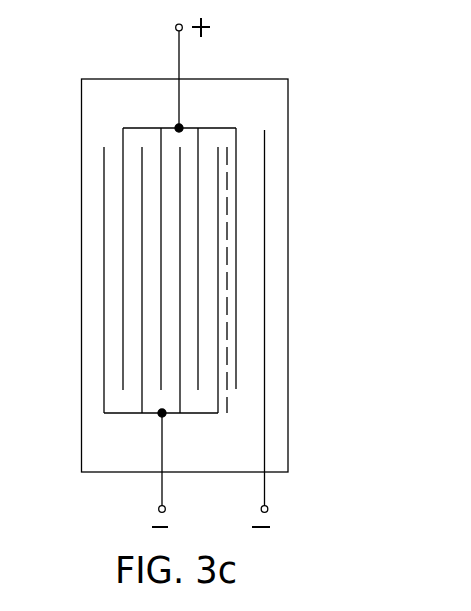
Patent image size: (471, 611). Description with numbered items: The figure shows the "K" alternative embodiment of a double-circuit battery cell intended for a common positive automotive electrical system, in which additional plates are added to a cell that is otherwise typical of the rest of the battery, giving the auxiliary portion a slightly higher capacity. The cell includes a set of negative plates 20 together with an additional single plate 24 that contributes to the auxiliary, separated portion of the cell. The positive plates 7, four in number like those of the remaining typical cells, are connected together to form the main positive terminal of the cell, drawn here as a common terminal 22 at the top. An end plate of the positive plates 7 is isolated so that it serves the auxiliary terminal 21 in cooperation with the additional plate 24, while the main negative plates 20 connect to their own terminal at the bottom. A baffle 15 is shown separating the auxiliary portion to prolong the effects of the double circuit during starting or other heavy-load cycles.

The positive plates 7 is at (236, 274).
The dashed element (reflective layer) 15 is at (228, 367).
The additional single plate 24 is at (264, 272).
The positive terminal 22 is at (181, 30).
The negative plates 20 is at (165, 507).
The auxiliary terminal 21 is at (268, 507).